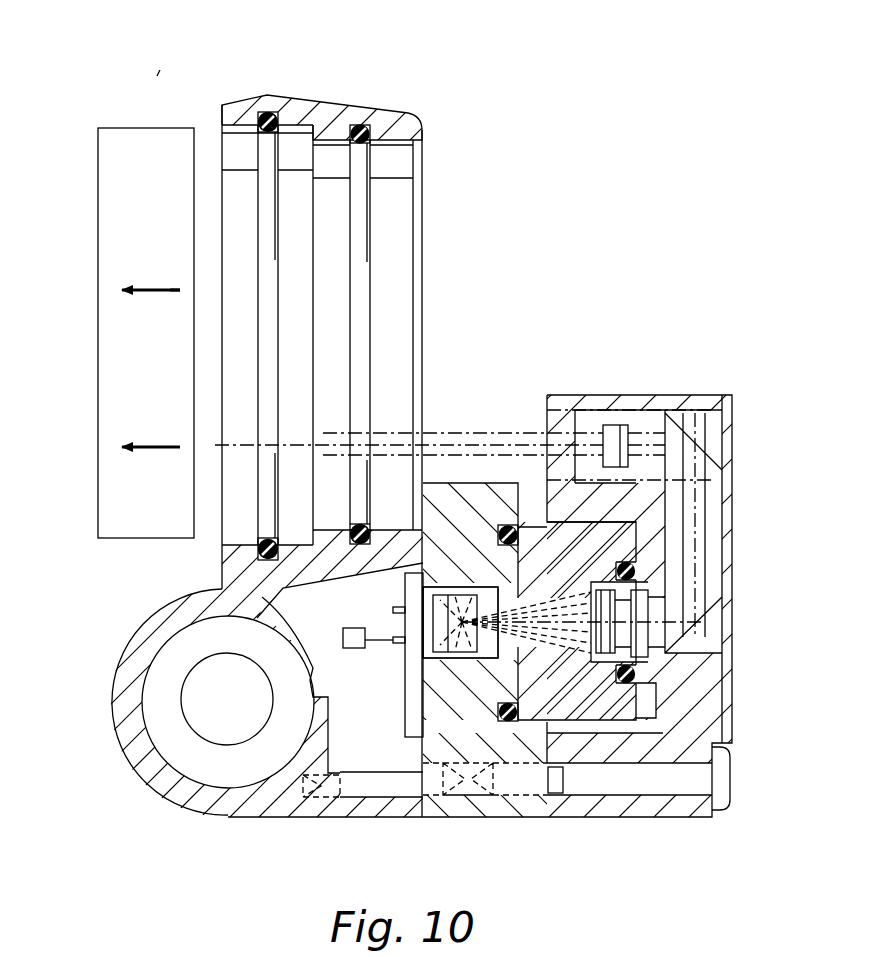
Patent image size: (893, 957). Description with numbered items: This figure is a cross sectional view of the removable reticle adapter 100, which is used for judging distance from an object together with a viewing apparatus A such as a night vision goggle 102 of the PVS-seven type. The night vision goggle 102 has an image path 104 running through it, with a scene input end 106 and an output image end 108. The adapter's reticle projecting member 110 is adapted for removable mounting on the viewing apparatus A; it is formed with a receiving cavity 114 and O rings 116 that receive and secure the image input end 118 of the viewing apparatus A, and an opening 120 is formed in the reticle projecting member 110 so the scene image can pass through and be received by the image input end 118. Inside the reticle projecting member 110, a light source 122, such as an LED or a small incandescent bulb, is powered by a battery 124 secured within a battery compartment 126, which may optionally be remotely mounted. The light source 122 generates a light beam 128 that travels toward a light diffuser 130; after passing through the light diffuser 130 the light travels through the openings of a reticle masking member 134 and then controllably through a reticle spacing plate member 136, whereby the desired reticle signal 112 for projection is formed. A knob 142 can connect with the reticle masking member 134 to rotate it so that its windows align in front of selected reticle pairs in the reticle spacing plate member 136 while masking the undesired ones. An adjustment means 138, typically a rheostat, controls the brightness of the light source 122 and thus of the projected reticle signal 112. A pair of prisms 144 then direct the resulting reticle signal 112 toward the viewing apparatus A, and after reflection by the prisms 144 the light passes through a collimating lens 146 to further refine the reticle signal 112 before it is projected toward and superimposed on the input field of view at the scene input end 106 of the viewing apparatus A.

The viewing apparatus A is at (158, 75).
The removable reticle adapter 100 is at (489, 398).
The night vision goggle 102 is at (180, 178).
The image path 104 is at (148, 287).
The scene input end 106 is at (176, 293).
The output image end 108 is at (116, 293).
The reticle projecting member 110 is at (263, 824).
The reticle signal 112 is at (442, 432).
The receiving cavity 114 is at (232, 157).
The O rings 116 is at (272, 110).
The image input end 118 is at (186, 122).
The opening 120 is at (440, 200).
The light source 122 is at (452, 662).
The battery 124 is at (205, 694).
The battery compartment 126 is at (158, 762).
The light beam 128 is at (508, 635).
The light diffuser 130 is at (588, 652).
The reticle masking member 134 is at (604, 664).
The reticle spacing plate member 136 is at (660, 655).
The adjustment means 138 is at (355, 650).
The knob 142 is at (622, 730).
The prisms 144 is at (693, 443).
The collimating lens 146 is at (615, 420).